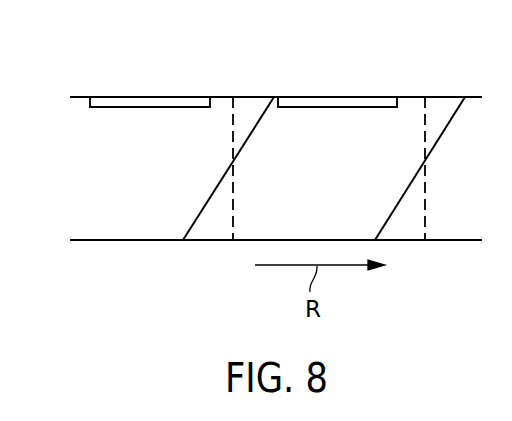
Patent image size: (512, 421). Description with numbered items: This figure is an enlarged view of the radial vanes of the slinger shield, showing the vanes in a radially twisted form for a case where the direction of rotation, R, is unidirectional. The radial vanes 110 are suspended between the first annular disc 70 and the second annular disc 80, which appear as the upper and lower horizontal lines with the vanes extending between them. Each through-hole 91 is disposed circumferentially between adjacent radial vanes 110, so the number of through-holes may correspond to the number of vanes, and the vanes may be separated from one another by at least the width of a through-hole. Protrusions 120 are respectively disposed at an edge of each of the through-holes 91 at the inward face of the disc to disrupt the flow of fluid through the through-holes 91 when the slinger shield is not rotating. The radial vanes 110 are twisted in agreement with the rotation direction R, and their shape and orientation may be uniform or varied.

The first annular disc 70 is at (242, 97).
The second annular disc 80 is at (212, 241).
The through-hole 91 is at (142, 97).
The radial vane 110 is at (214, 192).
The protrusion 120 is at (103, 108).